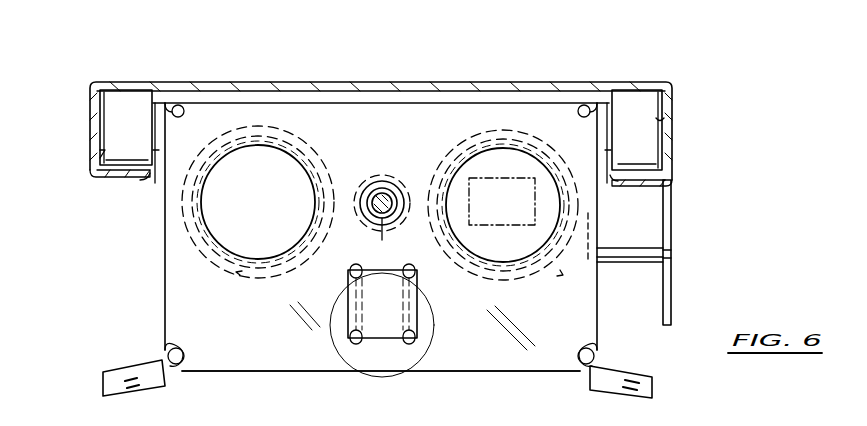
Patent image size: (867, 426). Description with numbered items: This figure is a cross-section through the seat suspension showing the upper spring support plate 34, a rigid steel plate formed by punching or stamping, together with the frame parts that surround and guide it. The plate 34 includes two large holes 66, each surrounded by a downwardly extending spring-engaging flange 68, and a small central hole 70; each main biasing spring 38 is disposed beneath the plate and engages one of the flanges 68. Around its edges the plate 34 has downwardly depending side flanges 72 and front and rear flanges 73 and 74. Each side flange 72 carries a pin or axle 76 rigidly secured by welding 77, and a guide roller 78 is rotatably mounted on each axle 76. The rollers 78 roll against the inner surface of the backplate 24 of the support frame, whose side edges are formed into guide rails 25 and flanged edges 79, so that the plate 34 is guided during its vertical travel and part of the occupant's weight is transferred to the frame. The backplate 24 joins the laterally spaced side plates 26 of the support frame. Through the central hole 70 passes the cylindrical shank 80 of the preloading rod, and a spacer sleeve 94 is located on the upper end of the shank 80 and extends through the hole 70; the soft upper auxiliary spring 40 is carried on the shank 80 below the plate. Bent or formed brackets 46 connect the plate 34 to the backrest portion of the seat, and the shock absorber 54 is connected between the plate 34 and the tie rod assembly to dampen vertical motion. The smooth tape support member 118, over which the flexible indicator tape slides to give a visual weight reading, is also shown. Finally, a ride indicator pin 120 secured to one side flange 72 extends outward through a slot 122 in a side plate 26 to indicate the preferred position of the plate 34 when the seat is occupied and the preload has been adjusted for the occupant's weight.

The backplate 24 is at (563, 82).
The guide rails 25 is at (100, 152).
The side plates 26 is at (672, 222).
The upper spring support plate 34 is at (404, 138).
The main biasing springs 38 is at (240, 276).
The upper auxiliary spring 40 is at (360, 228).
The brackets 46 is at (122, 385).
The shock absorber 54 is at (365, 380).
The large holes 66 is at (300, 170).
The spring-engaging flange 68 is at (200, 224).
The central hole 70 is at (394, 195).
The side flanges 72 is at (165, 301).
The front flange 73 is at (505, 371).
The rear flange 74 is at (432, 103).
The pin or axle 76 is at (157, 183).
The welding 77 is at (165, 108).
The guide roller 78 is at (115, 118).
The flanged edges 79 is at (147, 180).
The cylindrical shank 80 is at (384, 226).
The spacer sleeve 94 is at (382, 190).
The tape support member 118 is at (500, 178).
The ride indicator pin 120 is at (618, 262).
The slot 122 is at (668, 256).